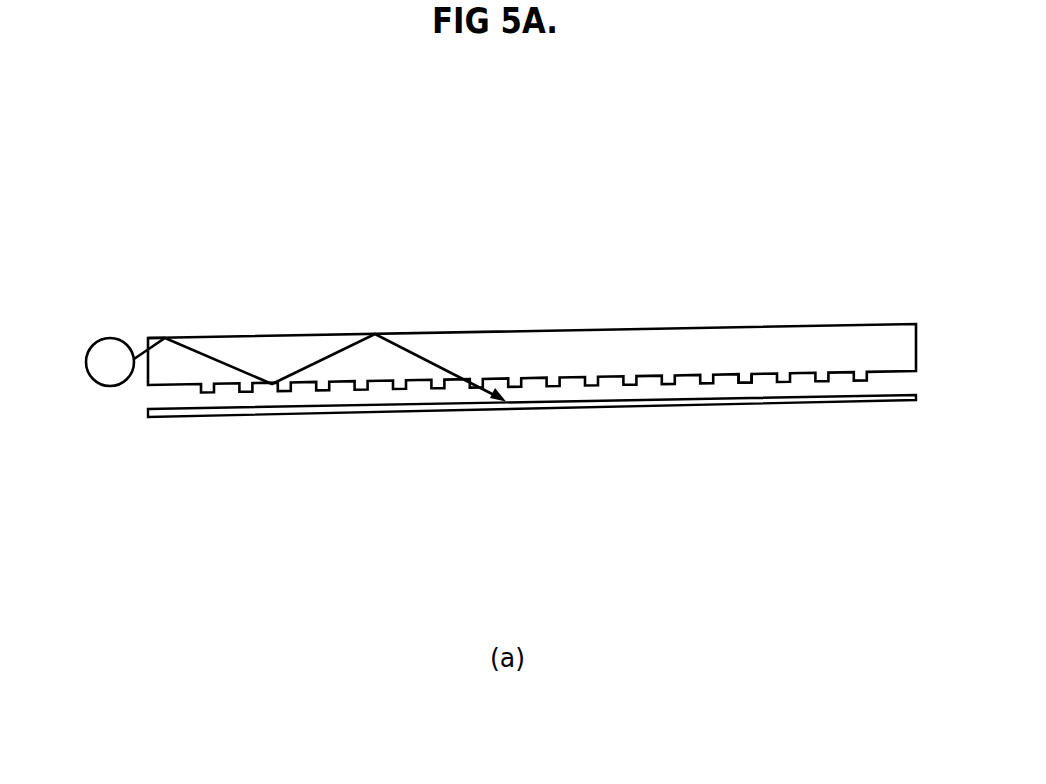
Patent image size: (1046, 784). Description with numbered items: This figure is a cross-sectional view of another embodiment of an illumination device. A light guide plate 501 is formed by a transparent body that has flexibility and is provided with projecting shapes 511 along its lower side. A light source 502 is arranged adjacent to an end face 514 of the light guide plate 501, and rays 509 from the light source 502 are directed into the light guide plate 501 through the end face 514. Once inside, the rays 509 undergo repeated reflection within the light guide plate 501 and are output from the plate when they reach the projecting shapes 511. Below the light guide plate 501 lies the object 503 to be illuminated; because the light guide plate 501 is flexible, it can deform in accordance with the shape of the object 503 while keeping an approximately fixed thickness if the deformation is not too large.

The light guide plate 501 is at (725, 340).
The light source 502 is at (109, 374).
The object to be illuminated 503 is at (572, 403).
The rays 509 is at (335, 337).
The projecting shapes 511 is at (745, 378).
The end face 514 is at (145, 338).